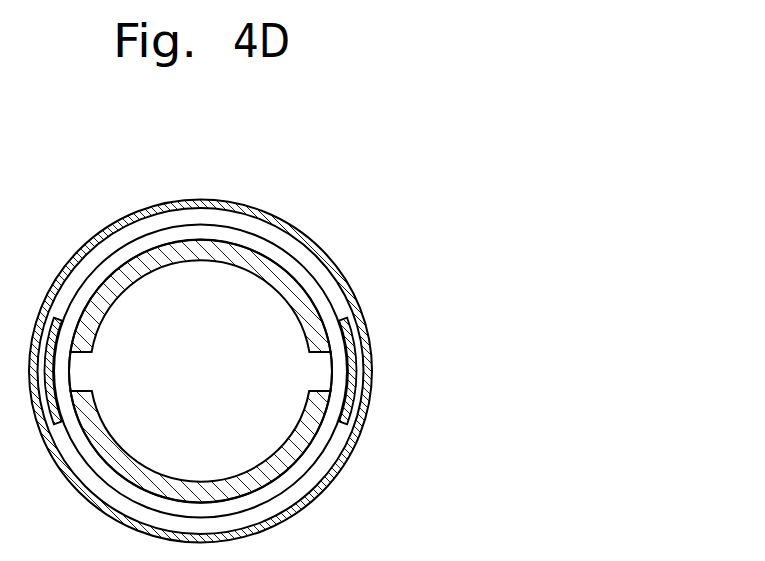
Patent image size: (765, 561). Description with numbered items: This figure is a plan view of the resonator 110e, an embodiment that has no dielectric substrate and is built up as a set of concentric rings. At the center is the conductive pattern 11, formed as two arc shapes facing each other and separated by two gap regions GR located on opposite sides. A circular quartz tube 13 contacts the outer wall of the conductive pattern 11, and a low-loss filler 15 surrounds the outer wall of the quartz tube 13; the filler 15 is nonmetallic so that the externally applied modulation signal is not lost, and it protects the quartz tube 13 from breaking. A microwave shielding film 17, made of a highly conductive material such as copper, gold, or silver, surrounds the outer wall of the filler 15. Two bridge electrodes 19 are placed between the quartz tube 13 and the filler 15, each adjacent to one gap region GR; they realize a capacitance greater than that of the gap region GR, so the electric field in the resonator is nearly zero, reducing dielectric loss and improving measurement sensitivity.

The resonator 110e is at (463, 145).
The microwave shielding film 17 is at (345, 463).
The bridge electrode 19 is at (353, 388).
The low-loss filler 15 is at (333, 288).
The quartz tube 13 is at (335, 330).
The conductive pattern 11 is at (307, 425).
The gap region GR is at (322, 370).